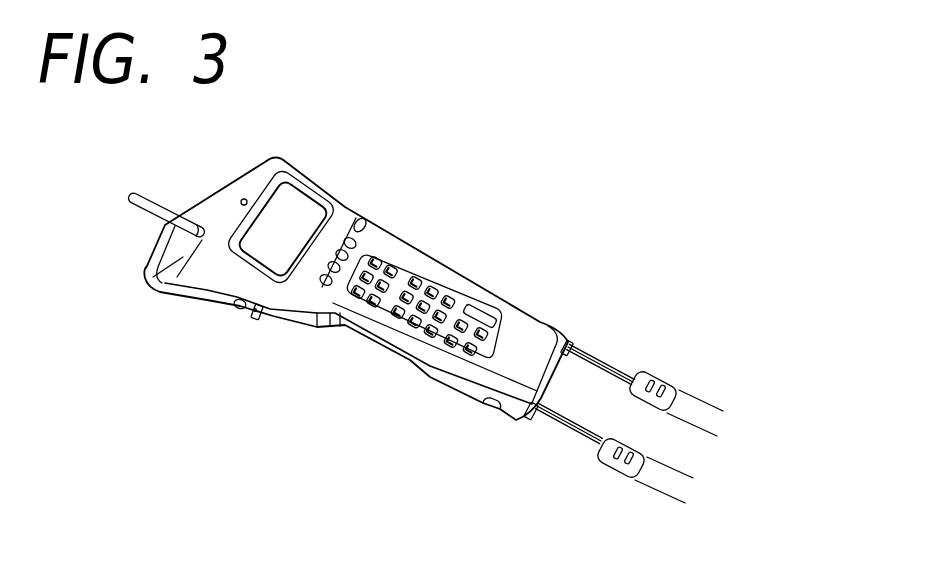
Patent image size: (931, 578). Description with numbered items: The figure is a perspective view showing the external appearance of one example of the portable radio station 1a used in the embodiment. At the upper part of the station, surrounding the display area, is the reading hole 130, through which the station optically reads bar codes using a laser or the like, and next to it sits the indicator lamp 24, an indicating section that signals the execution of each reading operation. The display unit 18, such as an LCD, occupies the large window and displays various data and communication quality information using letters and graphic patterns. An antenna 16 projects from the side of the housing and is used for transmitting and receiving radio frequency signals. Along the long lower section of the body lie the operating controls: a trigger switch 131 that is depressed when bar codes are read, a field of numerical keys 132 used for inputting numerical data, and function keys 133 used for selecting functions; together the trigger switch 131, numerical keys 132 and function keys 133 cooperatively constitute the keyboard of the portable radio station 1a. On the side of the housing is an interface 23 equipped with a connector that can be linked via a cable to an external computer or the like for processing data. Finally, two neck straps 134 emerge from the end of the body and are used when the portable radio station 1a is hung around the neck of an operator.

The portable radio station 1a is at (283, 159).
The antenna 16 is at (130, 198).
The display unit 18 is at (240, 251).
The interface 23 is at (238, 312).
The indicator lamp 24 is at (244, 199).
The reading hole 130 is at (195, 203).
The trigger switch 131 is at (365, 222).
The numerical keys 132 is at (512, 298).
The function keys 133 is at (356, 297).
The neck straps 134 is at (658, 481).